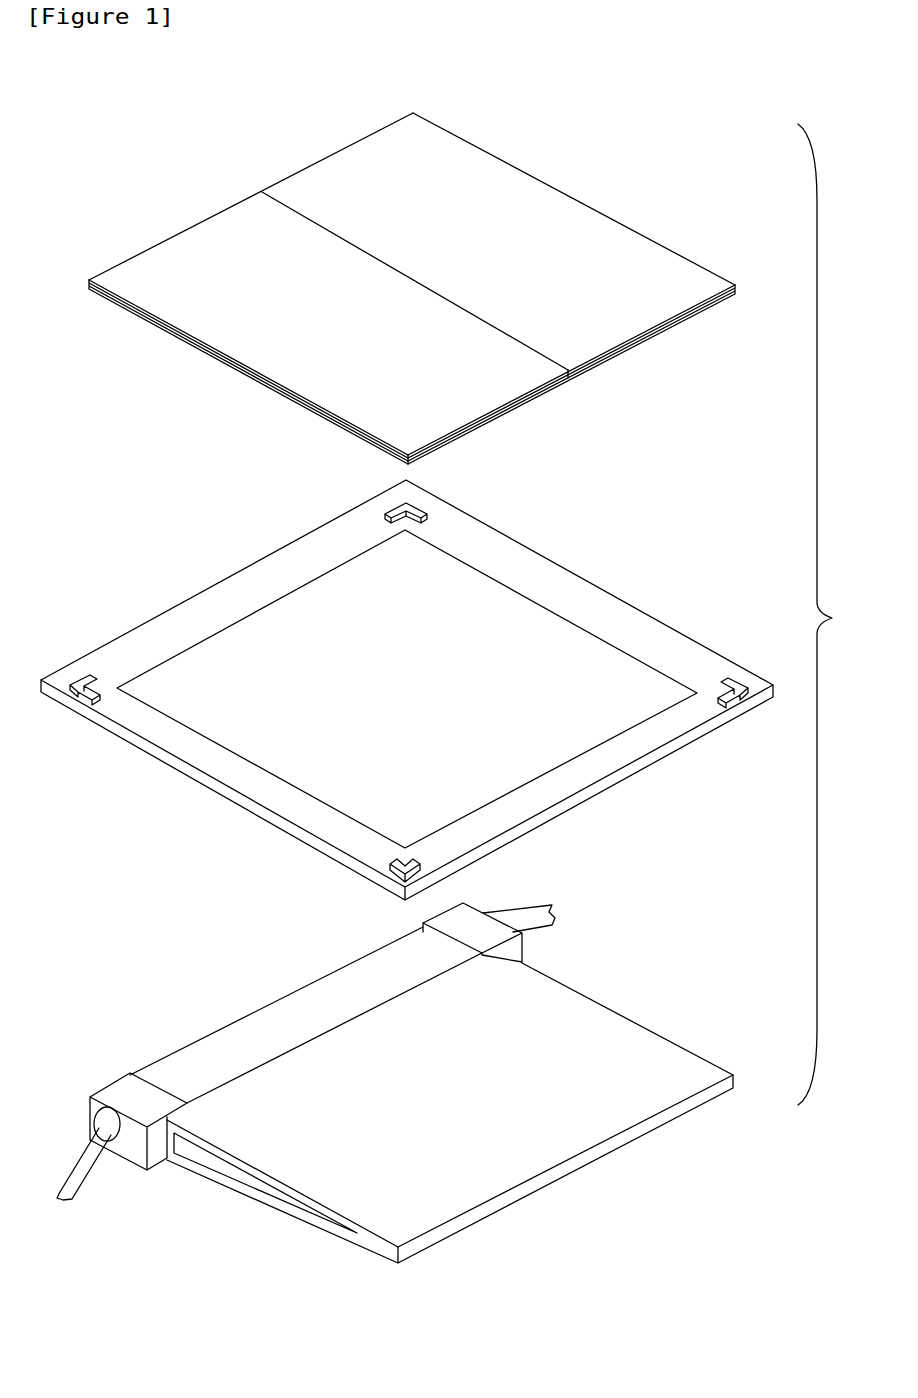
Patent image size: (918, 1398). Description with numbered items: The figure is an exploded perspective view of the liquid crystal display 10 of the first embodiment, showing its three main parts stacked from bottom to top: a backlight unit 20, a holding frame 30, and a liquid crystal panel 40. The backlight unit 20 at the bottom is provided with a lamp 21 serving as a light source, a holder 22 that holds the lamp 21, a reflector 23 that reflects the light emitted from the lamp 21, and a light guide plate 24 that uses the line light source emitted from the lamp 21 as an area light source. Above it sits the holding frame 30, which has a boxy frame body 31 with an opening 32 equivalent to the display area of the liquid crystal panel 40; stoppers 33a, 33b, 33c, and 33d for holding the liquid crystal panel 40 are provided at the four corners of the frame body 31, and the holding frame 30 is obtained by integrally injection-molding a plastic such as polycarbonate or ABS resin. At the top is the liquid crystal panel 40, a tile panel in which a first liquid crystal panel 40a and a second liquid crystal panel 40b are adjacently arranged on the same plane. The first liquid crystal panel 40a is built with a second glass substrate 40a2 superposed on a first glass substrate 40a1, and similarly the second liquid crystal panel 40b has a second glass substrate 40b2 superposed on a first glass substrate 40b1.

The liquid crystal display 10 is at (866, 628).
The backlight unit 20 is at (383, 1083).
The lamp 21 is at (95, 1118).
The holder 22 is at (108, 1083).
The reflector 23 is at (287, 1017).
The light guide plate 24 is at (650, 1047).
The holding frame 30 is at (407, 709).
The frame body 31 is at (627, 599).
The opening 32 is at (280, 623).
The stopper 33a is at (382, 890).
The stopper 33b is at (727, 685).
The stopper 33c is at (420, 513).
The stopper 33d is at (85, 680).
The liquid crystal panel 40 is at (427, 288).
The first liquid crystal panel 40a is at (328, 288).
The first glass substrate 40a1 is at (162, 333).
The second glass substrate 40a2 is at (318, 378).
The second liquid crystal panel 40b is at (510, 288).
The first glass substrate 40b1 is at (690, 320).
The second glass substrate 40b2 is at (605, 338).